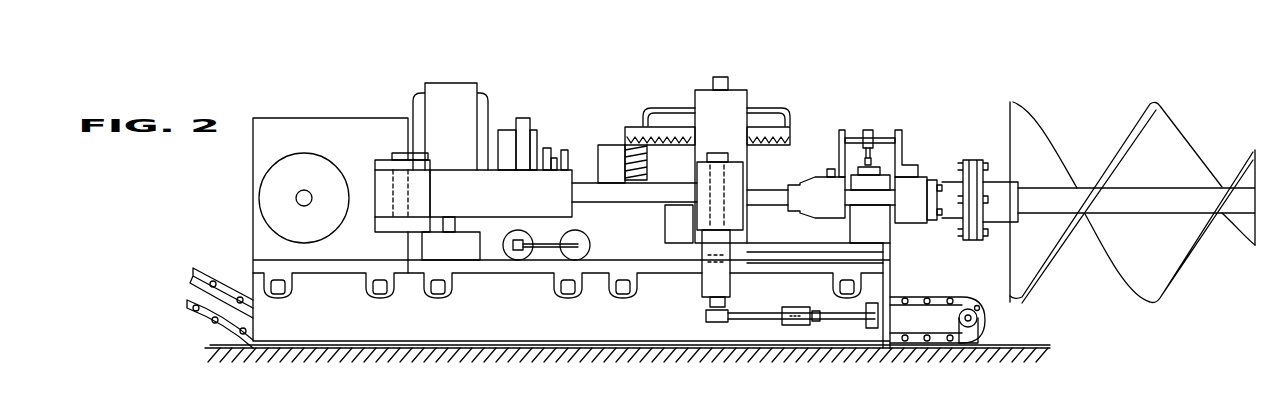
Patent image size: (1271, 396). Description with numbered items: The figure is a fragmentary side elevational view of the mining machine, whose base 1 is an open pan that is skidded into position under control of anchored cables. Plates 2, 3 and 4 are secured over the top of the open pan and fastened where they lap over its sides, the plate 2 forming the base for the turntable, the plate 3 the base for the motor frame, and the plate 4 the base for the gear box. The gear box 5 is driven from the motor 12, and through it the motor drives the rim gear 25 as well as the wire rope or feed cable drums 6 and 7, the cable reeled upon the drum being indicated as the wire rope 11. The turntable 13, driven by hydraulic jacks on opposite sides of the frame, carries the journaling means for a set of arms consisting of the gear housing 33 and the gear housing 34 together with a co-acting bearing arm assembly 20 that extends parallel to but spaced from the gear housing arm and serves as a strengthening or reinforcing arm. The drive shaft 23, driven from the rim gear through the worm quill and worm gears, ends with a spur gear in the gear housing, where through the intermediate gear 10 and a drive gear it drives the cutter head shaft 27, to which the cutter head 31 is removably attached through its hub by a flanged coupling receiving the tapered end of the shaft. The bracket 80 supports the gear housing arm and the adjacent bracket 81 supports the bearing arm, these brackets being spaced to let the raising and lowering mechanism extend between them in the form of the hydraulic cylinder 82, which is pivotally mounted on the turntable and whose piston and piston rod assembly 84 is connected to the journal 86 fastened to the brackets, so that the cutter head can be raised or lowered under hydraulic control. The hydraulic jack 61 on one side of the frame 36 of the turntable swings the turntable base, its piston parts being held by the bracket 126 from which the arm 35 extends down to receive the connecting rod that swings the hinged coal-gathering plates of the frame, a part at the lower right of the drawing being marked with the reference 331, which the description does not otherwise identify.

The base 1 is at (602, 366).
The plate 2 is at (815, 270).
The plate 3 is at (510, 275).
The plate 4 is at (337, 272).
The gear box 5 is at (329, 128).
The feed cable drum 6 is at (265, 185).
The feed cable drum 7 is at (719, 394).
The intermediate gear 10 is at (1000, 336).
The wire rope 11 is at (950, 297).
The motor 12 is at (481, 97).
The turntable 13 is at (882, 250).
The bearing arm assembly 20 is at (822, 190).
The drive shaft 23 is at (779, 195).
The rim gear 25 is at (813, 114).
The cutter head shaft 27 is at (871, 202).
The cutter head 31 is at (1127, 292).
The gear housing 33 is at (920, 177).
The gear housing 34 is at (764, 322).
The arm 35 is at (676, 287).
The frame of the turntable 36 is at (740, 100).
The hydraulic jack 61 is at (534, 210).
The bracket 80 is at (900, 130).
The bracket 81 is at (835, 140).
The hydraulic cylinder 82 is at (882, 234).
The piston and piston rod assembly 84 is at (868, 128).
The journal 86 is at (884, 136).
The bracket 126 is at (746, 229).
The bolt 331 is at (884, 348).